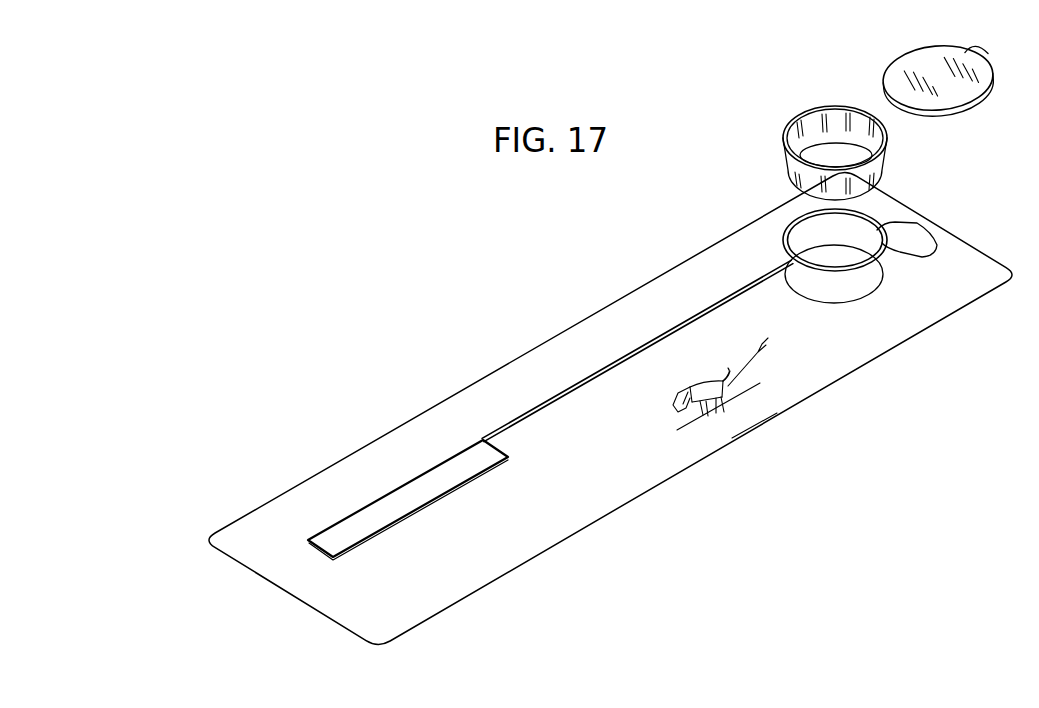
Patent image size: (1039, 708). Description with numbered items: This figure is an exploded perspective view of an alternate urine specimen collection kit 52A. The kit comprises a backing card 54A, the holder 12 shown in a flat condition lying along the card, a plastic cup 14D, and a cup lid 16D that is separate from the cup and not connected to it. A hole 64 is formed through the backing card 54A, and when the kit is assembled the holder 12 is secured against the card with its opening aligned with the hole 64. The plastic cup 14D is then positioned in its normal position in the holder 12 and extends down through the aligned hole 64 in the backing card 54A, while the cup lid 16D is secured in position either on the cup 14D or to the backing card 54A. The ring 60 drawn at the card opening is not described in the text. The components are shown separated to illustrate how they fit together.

The holder 12 is at (582, 382).
The plastic cup 14D is at (785, 160).
The cup lid 16D is at (945, 53).
The ring 60 is at (928, 233).
The hole 64 is at (848, 297).
The specimen collection kit 52A is at (610, 409).
The backing card 54A is at (550, 540).